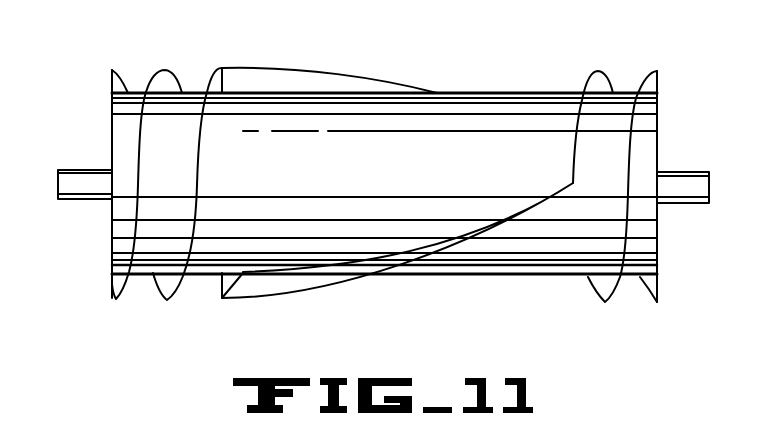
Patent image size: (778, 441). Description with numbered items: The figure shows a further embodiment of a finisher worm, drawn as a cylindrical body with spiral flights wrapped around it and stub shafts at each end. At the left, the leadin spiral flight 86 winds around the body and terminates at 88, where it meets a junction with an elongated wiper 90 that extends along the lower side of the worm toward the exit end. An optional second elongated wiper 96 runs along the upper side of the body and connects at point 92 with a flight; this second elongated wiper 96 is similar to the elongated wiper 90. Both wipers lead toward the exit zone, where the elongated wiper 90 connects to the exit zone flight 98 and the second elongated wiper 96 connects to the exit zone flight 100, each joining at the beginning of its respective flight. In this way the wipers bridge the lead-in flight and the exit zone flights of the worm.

The leadin spiral flight 86 is at (162, 71).
The termination point of leadin spiral flight 88 is at (219, 297).
The elongated wiper 90 is at (288, 295).
The connection point 92 is at (218, 70).
The second elongated wiper 96 is at (311, 72).
The exit zone flight 98 is at (586, 78).
The exit zone flight 100 is at (647, 77).